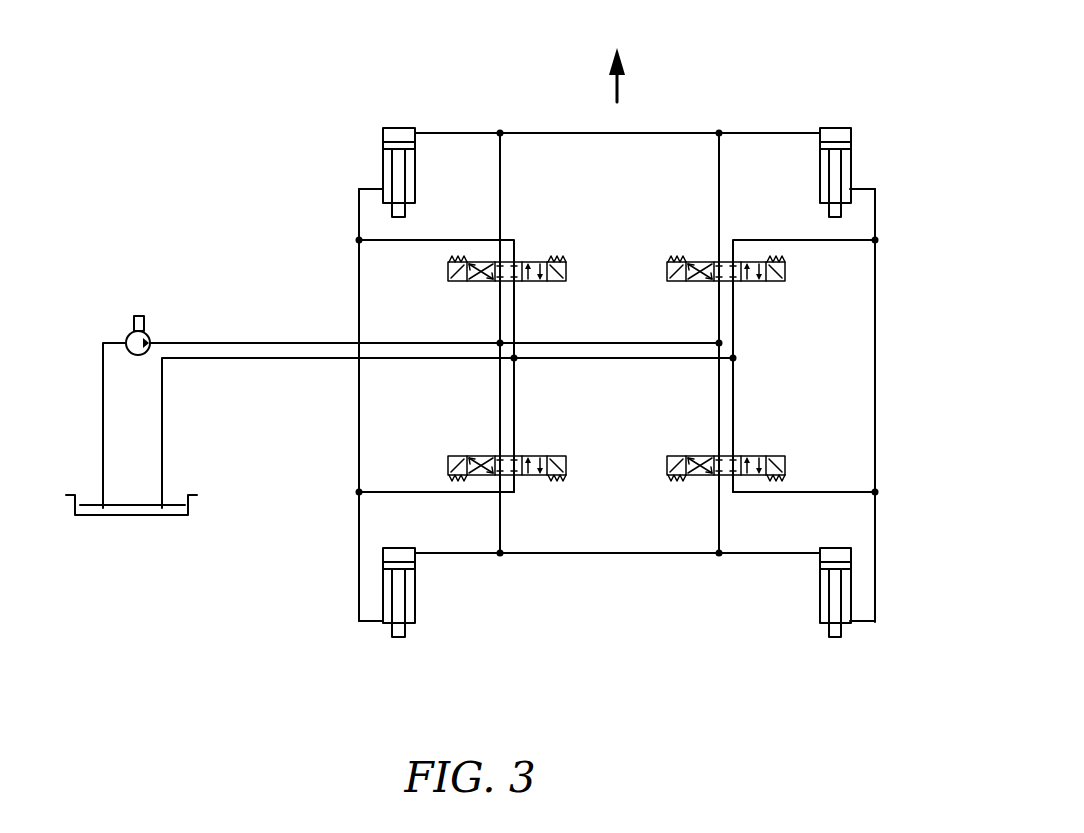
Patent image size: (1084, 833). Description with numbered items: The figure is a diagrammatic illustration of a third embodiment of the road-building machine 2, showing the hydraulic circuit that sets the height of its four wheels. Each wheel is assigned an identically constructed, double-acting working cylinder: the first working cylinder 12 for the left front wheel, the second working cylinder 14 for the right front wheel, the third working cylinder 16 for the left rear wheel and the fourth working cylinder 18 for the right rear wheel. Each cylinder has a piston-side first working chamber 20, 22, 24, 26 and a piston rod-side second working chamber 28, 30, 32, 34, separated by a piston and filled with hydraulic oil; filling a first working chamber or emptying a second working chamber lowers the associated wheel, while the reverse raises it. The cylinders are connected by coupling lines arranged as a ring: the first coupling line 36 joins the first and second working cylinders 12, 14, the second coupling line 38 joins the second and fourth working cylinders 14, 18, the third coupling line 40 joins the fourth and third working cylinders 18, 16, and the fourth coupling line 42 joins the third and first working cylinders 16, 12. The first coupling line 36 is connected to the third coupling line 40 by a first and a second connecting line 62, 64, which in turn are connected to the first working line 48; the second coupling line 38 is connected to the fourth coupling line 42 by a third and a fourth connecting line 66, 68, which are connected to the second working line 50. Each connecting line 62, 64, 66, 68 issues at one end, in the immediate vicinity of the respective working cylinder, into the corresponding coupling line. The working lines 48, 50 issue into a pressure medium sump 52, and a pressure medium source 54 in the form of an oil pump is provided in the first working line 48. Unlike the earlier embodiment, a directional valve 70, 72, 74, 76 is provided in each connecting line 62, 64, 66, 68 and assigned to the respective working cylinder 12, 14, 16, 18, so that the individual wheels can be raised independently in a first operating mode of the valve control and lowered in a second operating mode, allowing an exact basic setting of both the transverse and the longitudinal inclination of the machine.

The road-building machine 2 is at (297, 70).
The first working cylinder 12 is at (421, 165).
The second working cylinder 14 is at (812, 165).
The third working cylinder 16 is at (421, 590).
The fourth working cylinder 18 is at (812, 590).
The piston-side first working chamber 20 is at (395, 133).
The piston-side first working chamber 22 is at (833, 133).
The piston-side first working chamber 24 is at (395, 552).
The piston-side first working chamber 26 is at (832, 552).
The piston rod-side second working chamber 28 is at (413, 190).
The piston rod-side second working chamber 30 is at (822, 190).
The piston rod-side second working chamber 32 is at (412, 618).
The piston rod-side second working chamber 34 is at (822, 618).
The first coupling line 36 is at (565, 131).
The second coupling line 38 is at (875, 386).
The third coupling line 40 is at (612, 556).
The fourth coupling line 42 is at (359, 416).
The first working line 48 is at (277, 343).
The second working line 50 is at (262, 358).
The pressure medium sump 52 is at (176, 491).
The pressure medium source 54 is at (141, 312).
The first connecting line 62 is at (502, 193).
The second connecting line 64 is at (719, 193).
The third connecting line 66 is at (375, 242).
The fourth connecting line 68 is at (375, 490).
The directional valve 70 is at (532, 288).
The directional valve 72 is at (702, 288).
The directional valve 74 is at (486, 446).
The directional valve 76 is at (707, 446).